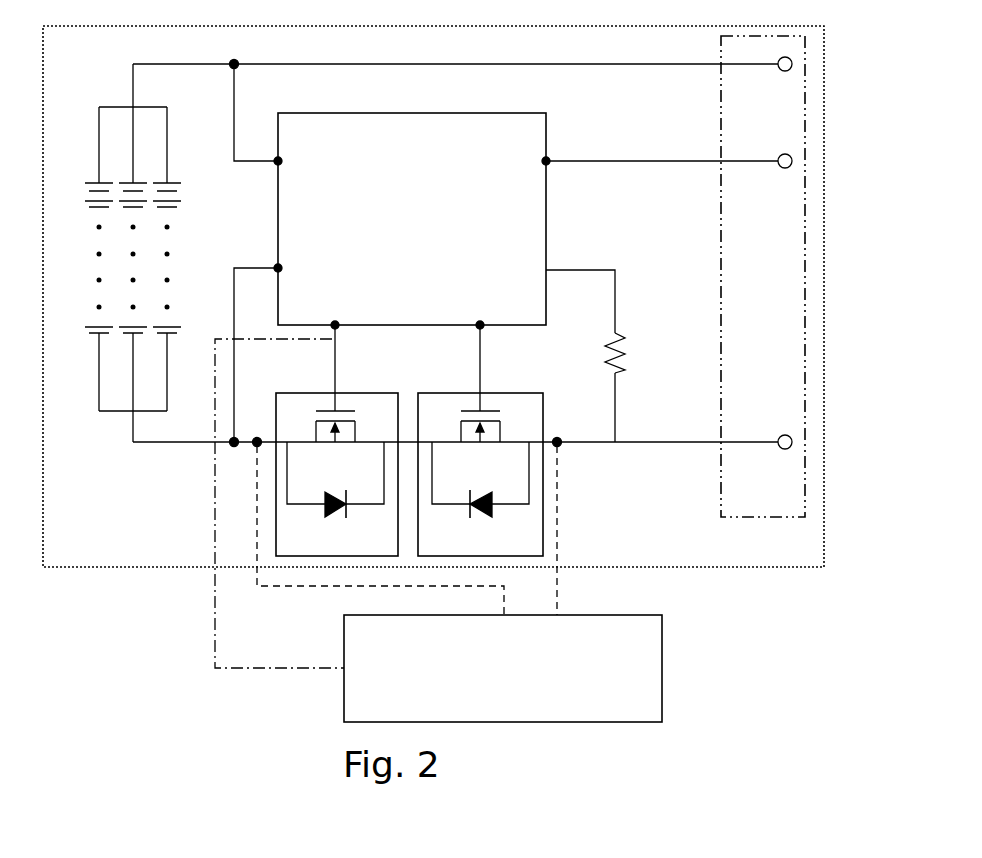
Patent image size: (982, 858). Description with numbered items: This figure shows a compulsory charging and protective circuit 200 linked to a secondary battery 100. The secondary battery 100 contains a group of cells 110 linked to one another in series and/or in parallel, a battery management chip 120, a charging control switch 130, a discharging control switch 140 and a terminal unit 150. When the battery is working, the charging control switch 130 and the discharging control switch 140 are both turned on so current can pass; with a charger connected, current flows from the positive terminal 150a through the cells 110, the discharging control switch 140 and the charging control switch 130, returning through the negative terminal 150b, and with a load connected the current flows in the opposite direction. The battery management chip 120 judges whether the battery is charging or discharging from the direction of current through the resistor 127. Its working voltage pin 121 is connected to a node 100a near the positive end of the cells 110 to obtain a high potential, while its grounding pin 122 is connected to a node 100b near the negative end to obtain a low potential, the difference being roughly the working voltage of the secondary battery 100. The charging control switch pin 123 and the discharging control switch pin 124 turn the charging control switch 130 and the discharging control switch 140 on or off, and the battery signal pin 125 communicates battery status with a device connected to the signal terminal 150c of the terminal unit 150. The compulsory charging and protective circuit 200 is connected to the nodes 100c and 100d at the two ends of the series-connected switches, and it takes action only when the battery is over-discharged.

The secondary battery 100 is at (826, 85).
The node 100a is at (232, 67).
The node 100b is at (234, 438).
The node 100c is at (560, 446).
The node 100d is at (257, 446).
The cells 110 is at (96, 336).
The battery management chip 120 is at (427, 227).
The working voltage pin (VDD) 121 is at (282, 160).
The grounding pin (VSS) 122 is at (282, 268).
The charging control switch pin 123 is at (482, 323).
The discharging control switch pin 124 is at (337, 323).
The battery signal pin 125 is at (548, 158).
The resistor 127 is at (617, 335).
The charging control switch 130 is at (498, 391).
The discharging control switch 140 is at (355, 391).
The terminal unit 150 is at (720, 500).
The positive terminal 150a is at (787, 72).
The negative terminal 150b is at (787, 450).
The signal terminal 150c is at (787, 169).
The compulsory charging and protective circuit 200 is at (664, 640).